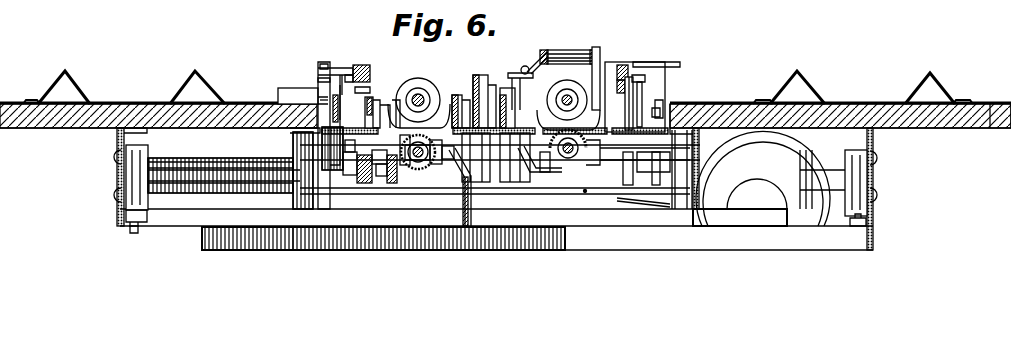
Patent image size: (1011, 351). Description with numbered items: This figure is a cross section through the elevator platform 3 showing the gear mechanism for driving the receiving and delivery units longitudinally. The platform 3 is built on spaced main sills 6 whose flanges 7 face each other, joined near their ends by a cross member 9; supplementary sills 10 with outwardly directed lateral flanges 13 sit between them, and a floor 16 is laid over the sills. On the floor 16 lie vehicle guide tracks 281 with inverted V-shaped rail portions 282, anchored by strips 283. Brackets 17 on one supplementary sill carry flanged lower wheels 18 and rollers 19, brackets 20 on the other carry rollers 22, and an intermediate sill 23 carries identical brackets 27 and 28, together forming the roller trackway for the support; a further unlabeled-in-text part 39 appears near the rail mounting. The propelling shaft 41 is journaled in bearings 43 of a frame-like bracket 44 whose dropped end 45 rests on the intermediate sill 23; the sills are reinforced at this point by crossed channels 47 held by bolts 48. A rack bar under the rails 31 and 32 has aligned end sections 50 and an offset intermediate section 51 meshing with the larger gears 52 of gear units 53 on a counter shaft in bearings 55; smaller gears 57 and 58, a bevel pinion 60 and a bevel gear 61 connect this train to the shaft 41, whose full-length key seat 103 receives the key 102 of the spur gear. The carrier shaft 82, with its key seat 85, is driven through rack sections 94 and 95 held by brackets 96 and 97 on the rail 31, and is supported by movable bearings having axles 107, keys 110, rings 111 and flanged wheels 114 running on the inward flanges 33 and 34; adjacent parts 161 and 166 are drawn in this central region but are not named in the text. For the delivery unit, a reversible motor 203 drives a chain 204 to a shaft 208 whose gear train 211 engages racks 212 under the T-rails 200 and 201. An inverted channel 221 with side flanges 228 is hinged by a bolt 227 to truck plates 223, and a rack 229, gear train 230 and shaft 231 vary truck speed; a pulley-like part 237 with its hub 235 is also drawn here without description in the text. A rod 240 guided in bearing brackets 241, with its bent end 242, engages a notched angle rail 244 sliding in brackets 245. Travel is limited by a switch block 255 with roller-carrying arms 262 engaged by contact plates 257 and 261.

The platform 3 is at (1000, 104).
The main sills 6 is at (118, 206).
The flanges 7 is at (874, 226).
The cross member 9 is at (172, 190).
The supplementary sills 10 is at (318, 152).
The lateral flanges 13 is at (296, 131).
The floor 16 is at (836, 112).
The brackets 17 is at (318, 97).
The flanged lower wheels 18 is at (340, 161).
The rollers 19 is at (322, 100).
The brackets 20 is at (663, 110).
The rollers 22 is at (665, 112).
The intermediate sill 23 is at (468, 222).
The brackets 27 is at (507, 165).
The brackets 28 is at (527, 165).
The rail 31 is at (348, 118).
The rail 32 is at (468, 100).
The inwardly directed flange 33 is at (377, 107).
The inwardly directed flange 34 is at (455, 95).
The base 39 is at (328, 112).
The shaft 41 is at (395, 160).
The bearings 43 is at (419, 170).
The frame-like bracket 44 is at (366, 160).
The dropped end 45 is at (472, 180).
The crossed channels 47 is at (203, 240).
The bolts 48 is at (133, 233).
The end sections 50 is at (348, 158).
The intermediate section 51 is at (345, 170).
The larger gears 52 is at (362, 185).
The gear units 53 is at (350, 175).
The bearings 55 is at (492, 165).
The smaller gear 57 is at (385, 185).
The smaller gear 58 is at (406, 100).
The bevel pinion 60 is at (410, 188).
The bevel gear 61 is at (428, 163).
The shaft 82 is at (416, 95).
The key seat 85 is at (421, 99).
The end rack sections 94 is at (345, 90).
The intermediate rack section 95 is at (356, 82).
The bracket 96 is at (340, 95).
The bracket 97 is at (360, 70).
The key 102 is at (420, 143).
The key seat 103 is at (425, 164).
The axle 107 is at (387, 100).
The key 110 is at (419, 90).
The ring 111 is at (397, 100).
The flanged wheels 114 is at (380, 102).
The upright 161 is at (483, 85).
The plate 166 is at (490, 95).
The T-rail 200 is at (697, 160).
The T-rail 201 is at (557, 170).
The reversible motor 203 is at (800, 166).
The chain 204 is at (662, 204).
The shaft 208 is at (570, 160).
The gear train 211 is at (585, 193).
The racks 212 is at (632, 170).
The inverted channel 221 is at (596, 60).
The plates 223 is at (602, 62).
The shaft or bolt 227 is at (616, 76).
The side flanges 228 is at (612, 68).
The rack 229 is at (641, 78).
The gear train 230 is at (637, 92).
The shaft 231 is at (622, 86).
The hub 235 is at (572, 94).
The pulley 237 is at (563, 92).
The rod 240 is at (560, 49).
The bearing brackets 241 is at (578, 54).
The bent end 242 is at (538, 58).
The angle rail 244 is at (521, 74).
The brackets 245 is at (590, 58).
The switch block 255 is at (278, 96).
The contact plate 257 is at (322, 67).
The contact plate 261 is at (642, 68).
The roller-carrying arms 262 is at (320, 80).
The tracks 281 is at (170, 102).
The inverted V-shaped rail portions 282 is at (65, 70).
The strips 283 is at (31, 103).